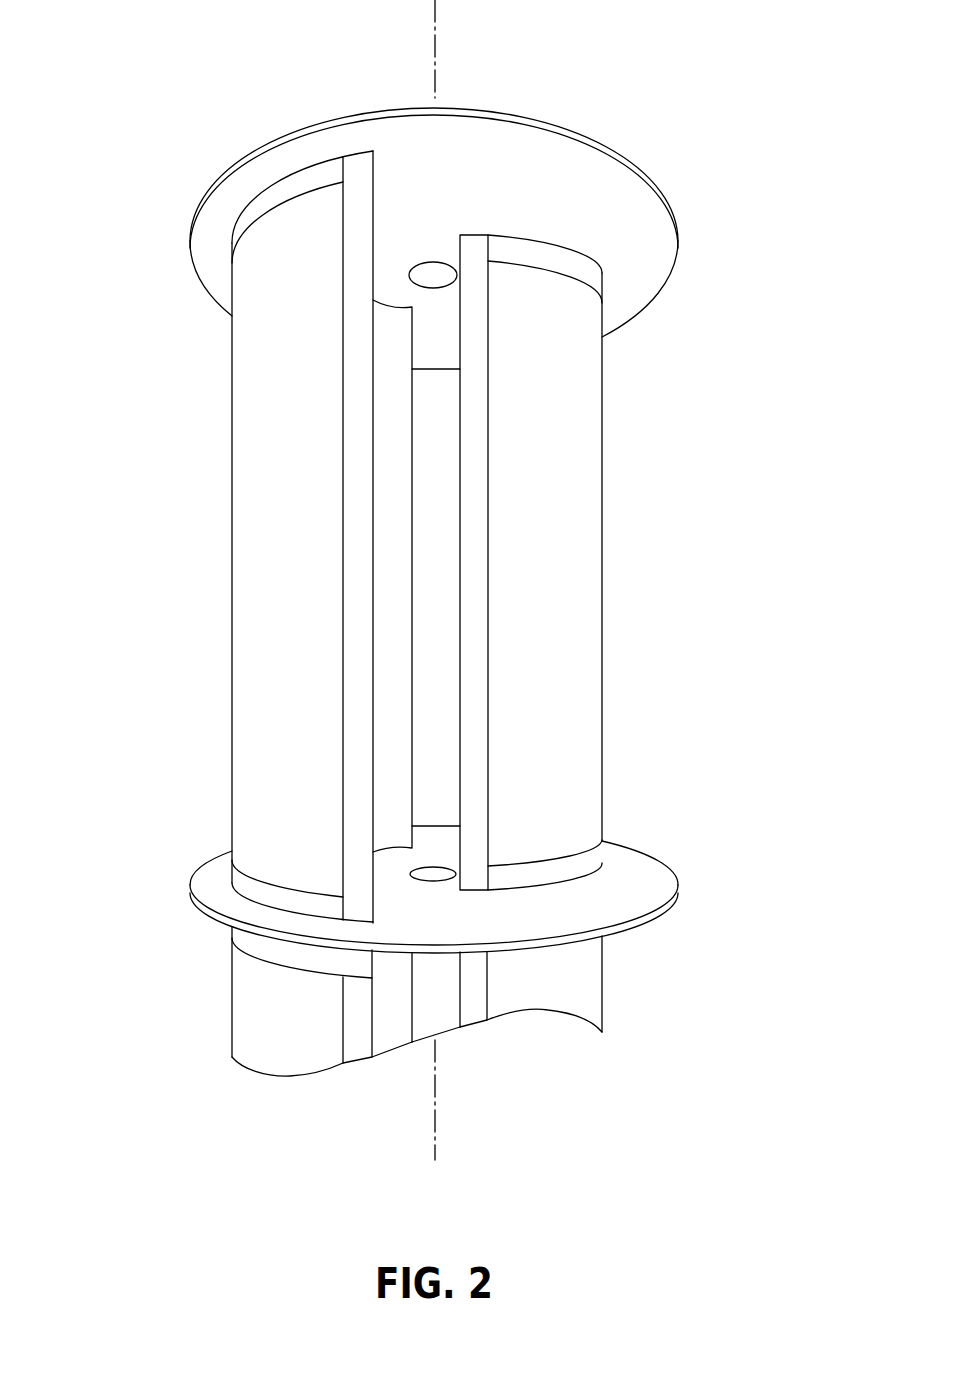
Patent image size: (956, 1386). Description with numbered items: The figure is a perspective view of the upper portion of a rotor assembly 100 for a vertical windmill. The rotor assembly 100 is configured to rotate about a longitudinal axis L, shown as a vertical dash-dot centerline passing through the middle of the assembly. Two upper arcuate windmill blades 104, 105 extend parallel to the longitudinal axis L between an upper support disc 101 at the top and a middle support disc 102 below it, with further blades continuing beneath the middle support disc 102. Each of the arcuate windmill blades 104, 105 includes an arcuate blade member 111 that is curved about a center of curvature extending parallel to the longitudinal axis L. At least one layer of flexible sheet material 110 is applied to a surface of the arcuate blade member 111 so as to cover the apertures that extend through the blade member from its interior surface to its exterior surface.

The rotor assembly 100 is at (435, 558).
The upper support disc 101 is at (643, 217).
The middle support disc 102 is at (653, 875).
The arcuate windmill blade 104 is at (603, 750).
The arcuate windmill blade 105 is at (232, 765).
The layer of flexible sheet material 110 is at (268, 507).
The arcuate blade member 111 is at (587, 270).
The longitudinal axis L is at (435, 42).